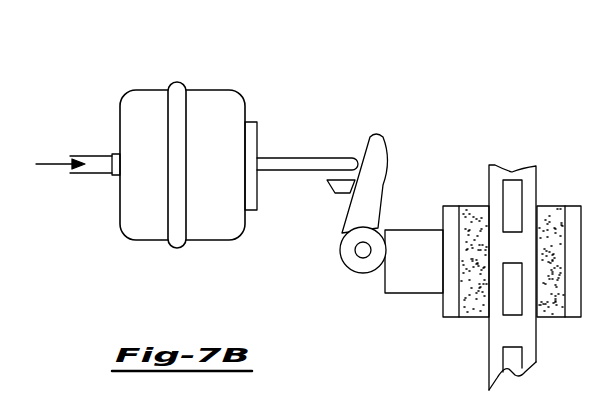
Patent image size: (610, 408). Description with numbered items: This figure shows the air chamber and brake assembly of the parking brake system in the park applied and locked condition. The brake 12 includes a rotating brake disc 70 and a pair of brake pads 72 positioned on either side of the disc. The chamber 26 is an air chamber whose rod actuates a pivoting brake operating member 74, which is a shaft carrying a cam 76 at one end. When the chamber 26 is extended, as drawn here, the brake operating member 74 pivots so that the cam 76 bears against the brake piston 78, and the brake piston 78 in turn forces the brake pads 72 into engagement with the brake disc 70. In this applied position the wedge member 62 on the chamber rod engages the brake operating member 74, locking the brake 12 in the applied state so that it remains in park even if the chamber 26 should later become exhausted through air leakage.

The brake 12 is at (513, 133).
The chamber 26 is at (210, 105).
The wedge member 62 is at (334, 190).
The brake disc 70 is at (494, 362).
The brake pads 72 is at (472, 222).
The brake operating member 74 is at (386, 148).
The cam 76 is at (352, 252).
The brake piston 78 is at (412, 245).